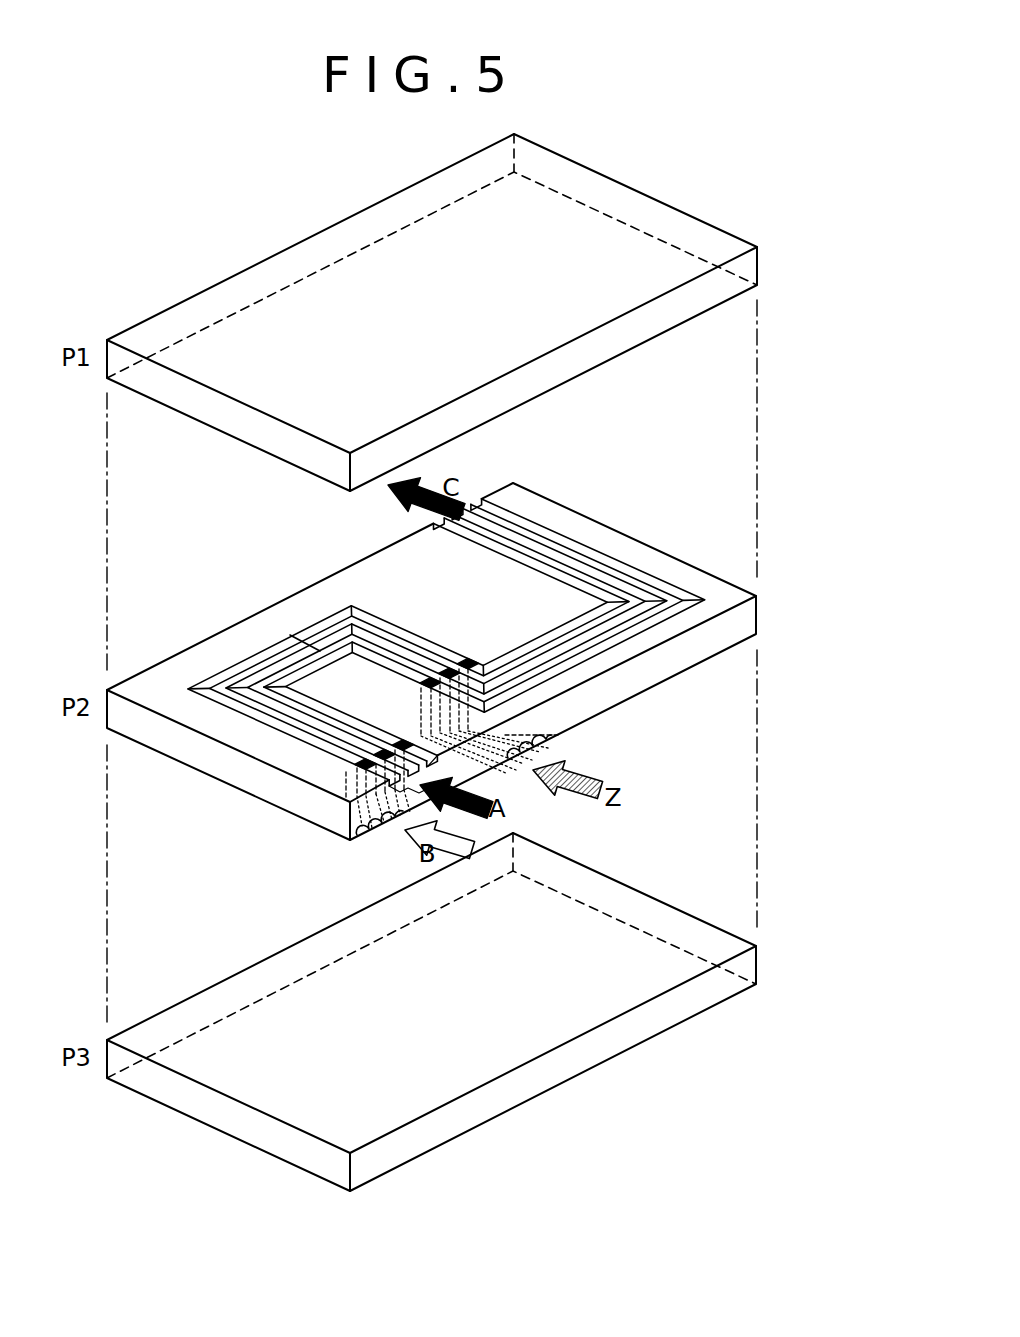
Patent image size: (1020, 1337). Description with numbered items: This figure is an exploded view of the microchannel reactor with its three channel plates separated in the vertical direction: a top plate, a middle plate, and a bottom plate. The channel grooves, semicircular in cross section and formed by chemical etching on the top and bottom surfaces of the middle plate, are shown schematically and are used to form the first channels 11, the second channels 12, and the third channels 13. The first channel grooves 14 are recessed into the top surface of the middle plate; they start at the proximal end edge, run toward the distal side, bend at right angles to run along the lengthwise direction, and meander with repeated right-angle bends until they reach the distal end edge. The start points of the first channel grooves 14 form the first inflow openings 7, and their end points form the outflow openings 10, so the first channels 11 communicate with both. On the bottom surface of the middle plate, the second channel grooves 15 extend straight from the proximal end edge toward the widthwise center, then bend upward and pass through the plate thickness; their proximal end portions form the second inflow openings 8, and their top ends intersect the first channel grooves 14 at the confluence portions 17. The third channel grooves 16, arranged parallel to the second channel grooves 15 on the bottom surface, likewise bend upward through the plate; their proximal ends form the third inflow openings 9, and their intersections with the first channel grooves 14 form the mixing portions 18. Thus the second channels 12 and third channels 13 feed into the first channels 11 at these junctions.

The first inflow openings 7 is at (433, 768).
The second inflow openings 8 is at (387, 826).
The third inflow openings 9 is at (548, 745).
The outflow openings 10 is at (486, 512).
The first channels 11 is at (278, 740).
The second channels 12 is at (372, 848).
The third channels 13 is at (520, 727).
The first channel grooves 14 is at (305, 646).
The second channel grooves 15 is at (356, 838).
The third channel grooves 16 is at (560, 733).
The confluence portions 17 is at (348, 764).
The mixing portions 18 is at (468, 660).